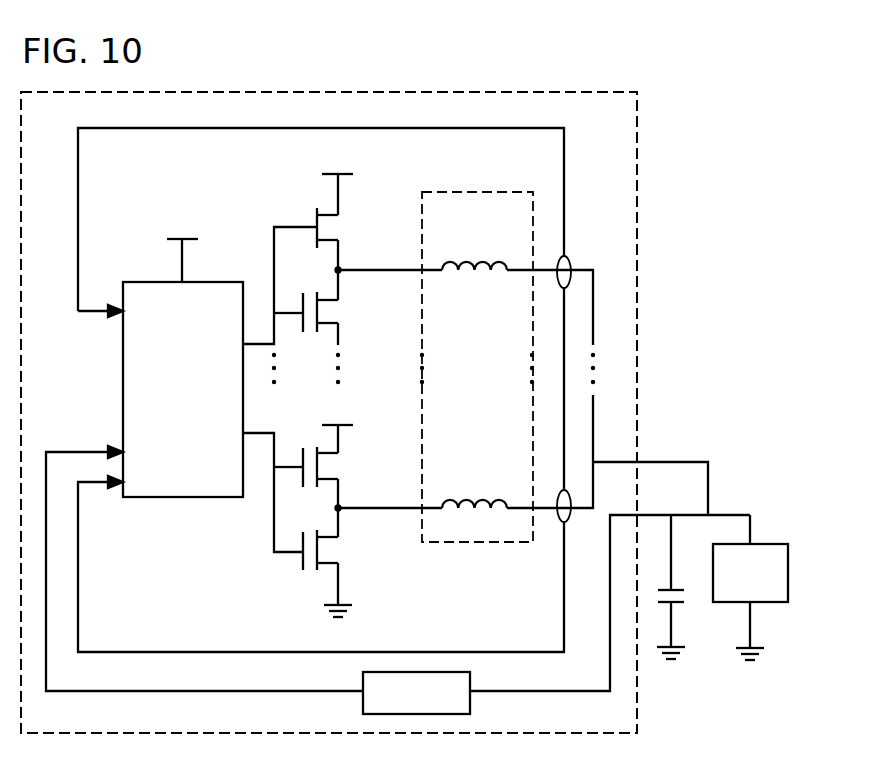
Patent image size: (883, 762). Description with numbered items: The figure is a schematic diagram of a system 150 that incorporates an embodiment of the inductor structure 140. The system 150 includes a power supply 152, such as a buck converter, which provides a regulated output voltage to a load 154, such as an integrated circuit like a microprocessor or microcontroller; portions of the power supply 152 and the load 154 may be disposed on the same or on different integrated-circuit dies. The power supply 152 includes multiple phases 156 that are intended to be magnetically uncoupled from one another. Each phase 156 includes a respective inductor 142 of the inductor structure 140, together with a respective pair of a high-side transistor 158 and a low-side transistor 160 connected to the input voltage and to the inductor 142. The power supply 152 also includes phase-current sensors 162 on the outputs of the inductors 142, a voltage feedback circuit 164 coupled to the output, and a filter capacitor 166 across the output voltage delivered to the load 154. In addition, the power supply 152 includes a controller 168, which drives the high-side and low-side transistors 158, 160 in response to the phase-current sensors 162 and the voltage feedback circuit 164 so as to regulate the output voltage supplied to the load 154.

The system 150 is at (477, 63).
The power supply 152 is at (637, 181).
The load 154 is at (770, 544).
The phases 156 is at (258, 205).
The high-side transistor 158 is at (323, 230).
The low-side transistor 160 is at (323, 312).
The phase-current sensors 162 is at (571, 278).
The voltage feedback circuit 164 is at (363, 700).
The filter capacitor 166 is at (676, 604).
The controller 168 is at (157, 282).
The inductor structure 140 is at (470, 192).
The inductor 142 is at (470, 259).